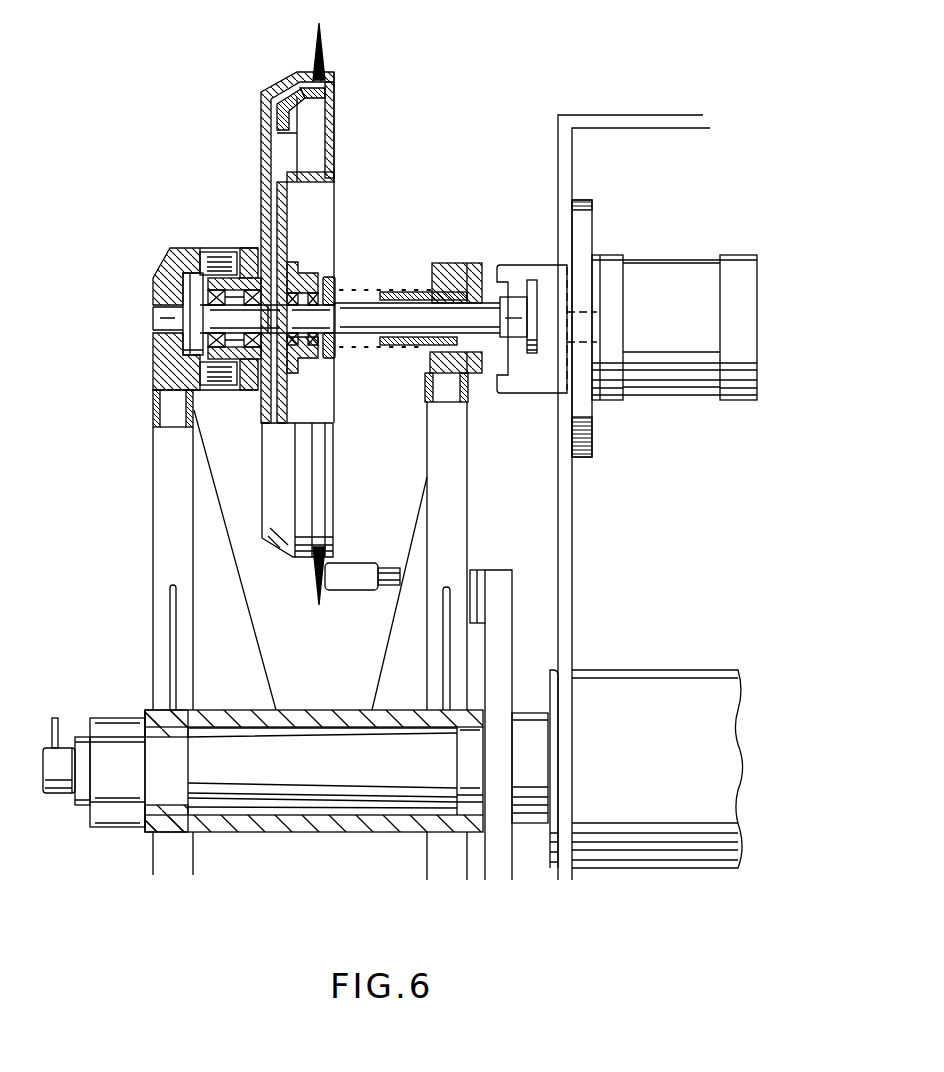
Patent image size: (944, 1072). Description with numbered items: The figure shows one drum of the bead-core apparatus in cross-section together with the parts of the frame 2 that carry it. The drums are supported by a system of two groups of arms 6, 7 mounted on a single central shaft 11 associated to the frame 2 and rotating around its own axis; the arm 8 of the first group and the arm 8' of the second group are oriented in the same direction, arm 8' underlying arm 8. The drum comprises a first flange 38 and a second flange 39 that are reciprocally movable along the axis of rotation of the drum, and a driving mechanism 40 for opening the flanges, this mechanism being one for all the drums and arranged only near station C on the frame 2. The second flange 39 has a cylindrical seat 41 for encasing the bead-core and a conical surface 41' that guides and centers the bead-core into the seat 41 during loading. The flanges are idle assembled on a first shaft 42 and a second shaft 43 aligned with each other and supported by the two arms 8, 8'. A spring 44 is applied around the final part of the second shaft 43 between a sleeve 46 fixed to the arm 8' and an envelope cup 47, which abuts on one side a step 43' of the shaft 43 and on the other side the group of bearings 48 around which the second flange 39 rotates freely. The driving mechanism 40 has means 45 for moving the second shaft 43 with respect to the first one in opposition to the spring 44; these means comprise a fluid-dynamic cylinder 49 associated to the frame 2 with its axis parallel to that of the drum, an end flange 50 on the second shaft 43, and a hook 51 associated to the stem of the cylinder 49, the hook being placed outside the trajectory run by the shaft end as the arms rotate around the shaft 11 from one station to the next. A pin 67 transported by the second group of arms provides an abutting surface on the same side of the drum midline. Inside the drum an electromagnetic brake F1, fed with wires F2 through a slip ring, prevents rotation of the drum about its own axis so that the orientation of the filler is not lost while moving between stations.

The frame 2 is at (583, 562).
The first group of arms 6 is at (242, 647).
The second group of arms 7 is at (397, 648).
The arm 8 is at (138, 651).
The arm 8' is at (473, 641).
The central shaft 11 is at (160, 780).
The first flange 38 is at (277, 88).
The second flange 39 is at (337, 148).
The driving mechanism 40 is at (500, 222).
The cylindrical seat 41 is at (350, 89).
The conical surface 41' is at (339, 109).
The first shaft 42 is at (232, 363).
The second shaft 43 is at (417, 337).
The step 43' is at (397, 379).
The spring 44 is at (370, 285).
The means for moving the second shaft 45 is at (580, 245).
The sleeve 46 is at (473, 263).
The envelope cup 47 is at (338, 270).
The group of bearings 48 is at (315, 263).
The fluid-dynamic cylinder 49 is at (650, 377).
The end flange 50 is at (530, 293).
The hook 51 is at (528, 383).
The pin 67 is at (360, 570).
The electromagnetic brake F1 is at (203, 245).
The wires F2 is at (57, 718).